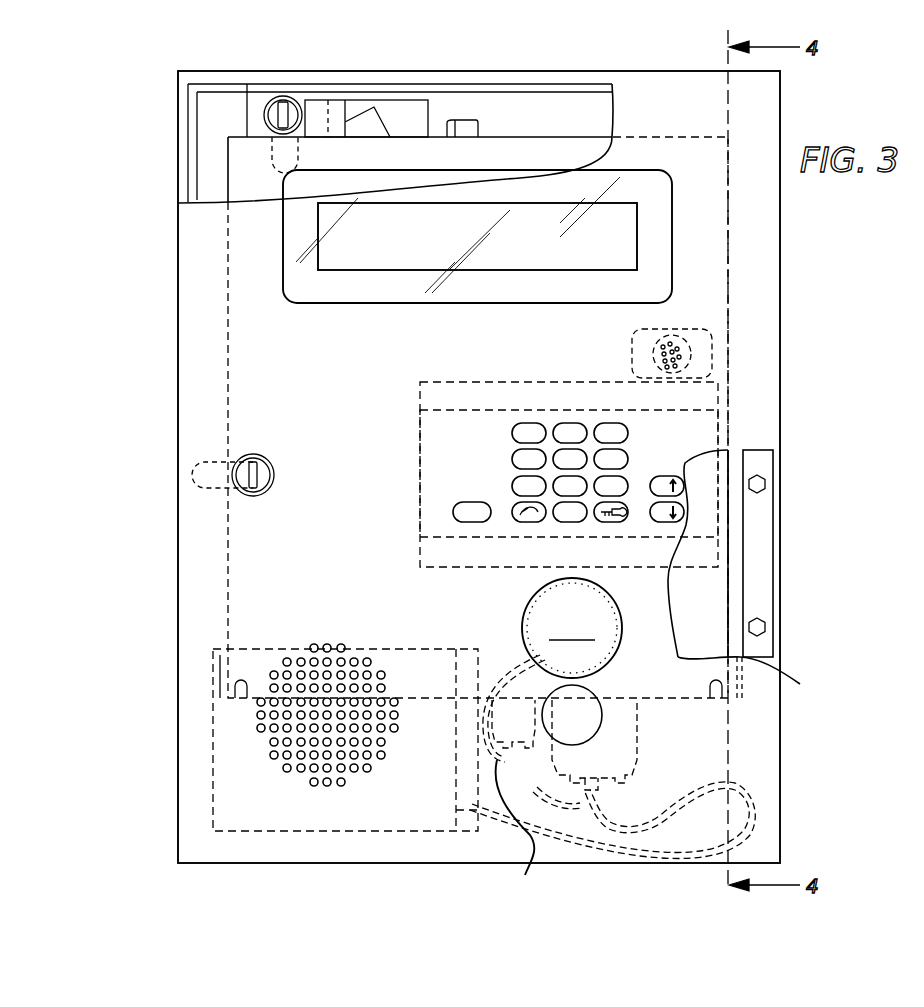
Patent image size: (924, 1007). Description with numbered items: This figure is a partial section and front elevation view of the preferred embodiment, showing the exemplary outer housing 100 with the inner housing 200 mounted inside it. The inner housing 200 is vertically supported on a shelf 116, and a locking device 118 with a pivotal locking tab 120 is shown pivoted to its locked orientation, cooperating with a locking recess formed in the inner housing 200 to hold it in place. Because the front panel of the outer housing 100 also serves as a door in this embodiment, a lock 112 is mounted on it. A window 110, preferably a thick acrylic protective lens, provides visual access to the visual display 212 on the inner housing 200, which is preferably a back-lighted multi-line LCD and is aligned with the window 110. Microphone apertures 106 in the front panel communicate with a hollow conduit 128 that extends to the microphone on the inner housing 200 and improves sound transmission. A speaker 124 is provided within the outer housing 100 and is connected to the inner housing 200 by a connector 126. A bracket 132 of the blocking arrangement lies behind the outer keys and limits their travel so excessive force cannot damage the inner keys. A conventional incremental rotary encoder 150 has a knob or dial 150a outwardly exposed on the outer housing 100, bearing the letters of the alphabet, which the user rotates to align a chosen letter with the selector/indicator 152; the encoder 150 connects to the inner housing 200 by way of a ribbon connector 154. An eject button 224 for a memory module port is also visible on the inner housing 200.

The outer housing 100 is at (178, 391).
The microphone apertures 106 is at (678, 352).
The window 110 is at (672, 268).
The lock 112 is at (268, 488).
The shelf 116 is at (403, 120).
The locking device 118 is at (276, 74).
The locking tab 120 is at (290, 158).
The speaker 124 is at (370, 832).
The connector 126 is at (638, 748).
The hollow conduit 128 is at (650, 356).
The bracket 132 is at (447, 566).
The incremental rotary encoder 150 is at (645, 599).
The knob or dial 150a is at (703, 662).
The index mark or selector/indicator 152 is at (800, 684).
The ribbon connector 154 is at (612, 776).
The inner housing 200 is at (233, 168).
The visual display 212 is at (623, 215).
The eject button 224 is at (474, 128).